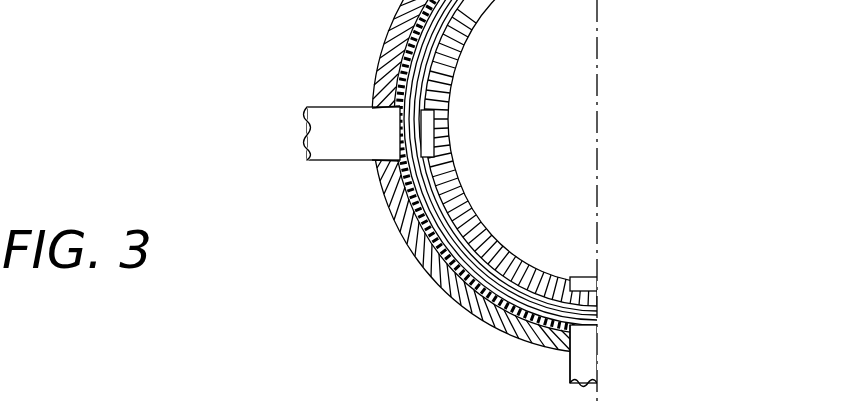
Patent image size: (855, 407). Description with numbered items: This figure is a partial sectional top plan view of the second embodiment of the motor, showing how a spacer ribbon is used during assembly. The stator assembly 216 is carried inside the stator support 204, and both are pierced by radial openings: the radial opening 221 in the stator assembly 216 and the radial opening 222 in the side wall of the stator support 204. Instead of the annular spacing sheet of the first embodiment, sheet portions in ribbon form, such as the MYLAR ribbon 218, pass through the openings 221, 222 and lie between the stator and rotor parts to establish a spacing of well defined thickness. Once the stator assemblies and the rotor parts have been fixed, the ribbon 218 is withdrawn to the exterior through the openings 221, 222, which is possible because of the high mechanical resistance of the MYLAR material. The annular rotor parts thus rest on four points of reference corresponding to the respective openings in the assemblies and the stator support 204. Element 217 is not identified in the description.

The stator support 204 is at (470, 312).
The stator assembly 216 is at (463, 78).
The bearing ring 217 is at (426, 271).
The MYLAR ribbon 218 is at (302, 130).
The radial opening 221 is at (392, 106).
The radial opening 222 is at (374, 164).